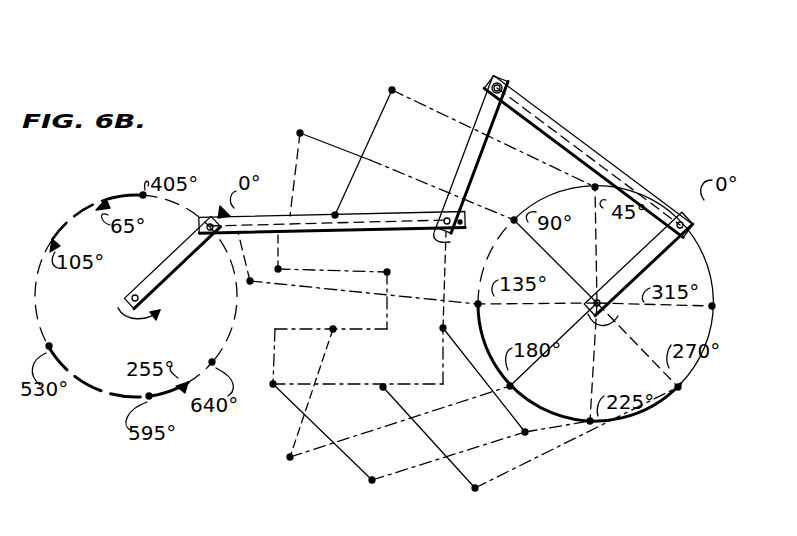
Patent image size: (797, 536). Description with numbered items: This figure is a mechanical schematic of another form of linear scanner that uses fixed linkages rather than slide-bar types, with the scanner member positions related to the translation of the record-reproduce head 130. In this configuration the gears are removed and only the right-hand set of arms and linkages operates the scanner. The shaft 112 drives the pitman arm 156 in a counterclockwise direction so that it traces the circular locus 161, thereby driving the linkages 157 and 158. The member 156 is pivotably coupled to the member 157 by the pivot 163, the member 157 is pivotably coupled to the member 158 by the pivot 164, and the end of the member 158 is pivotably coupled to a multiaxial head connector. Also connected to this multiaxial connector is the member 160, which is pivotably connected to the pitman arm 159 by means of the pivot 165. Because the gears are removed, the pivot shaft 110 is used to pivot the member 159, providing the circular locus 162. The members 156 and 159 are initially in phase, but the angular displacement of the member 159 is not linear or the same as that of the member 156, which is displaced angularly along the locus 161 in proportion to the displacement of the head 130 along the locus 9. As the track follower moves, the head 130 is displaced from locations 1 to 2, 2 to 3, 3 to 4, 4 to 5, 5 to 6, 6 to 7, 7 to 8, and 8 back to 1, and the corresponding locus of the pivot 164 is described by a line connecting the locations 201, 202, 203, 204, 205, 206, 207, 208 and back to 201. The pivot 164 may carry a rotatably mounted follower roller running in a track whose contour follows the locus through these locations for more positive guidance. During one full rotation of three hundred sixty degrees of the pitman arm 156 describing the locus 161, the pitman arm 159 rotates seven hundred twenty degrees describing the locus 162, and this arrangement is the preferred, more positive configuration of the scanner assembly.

The head location 1 is at (463, 214).
The head location 2 is at (342, 208).
The head location 3 is at (284, 268).
The head location 4 is at (388, 270).
The head location 5 is at (336, 331).
The head location 6 is at (276, 384).
The head location 7 is at (384, 386).
The head location 8 is at (441, 327).
The head locus 9 is at (350, 386).
The pivot shaft 110 is at (125, 308).
The shaft 112 is at (614, 310).
The head 130 is at (462, 237).
The pitman arm 156 is at (648, 254).
The linkage member 157 is at (594, 164).
The linkage member 158 is at (470, 148).
The pitman arm 159 is at (162, 270).
The linkage member 160 is at (236, 216).
The circular locus 161 is at (628, 414).
The circular locus 162 is at (64, 432).
The pivot 163 is at (690, 228).
The pivot 164 is at (508, 90).
The pivot 165 is at (218, 232).
The pivot location 201 is at (505, 78).
The pivot location 202 is at (392, 82).
The pivot location 203 is at (298, 131).
The pivot location 204 is at (250, 284).
The pivot location 205 is at (288, 462).
The pivot location 206 is at (370, 484).
The pivot location 207 is at (475, 492).
The pivot location 208 is at (538, 456).